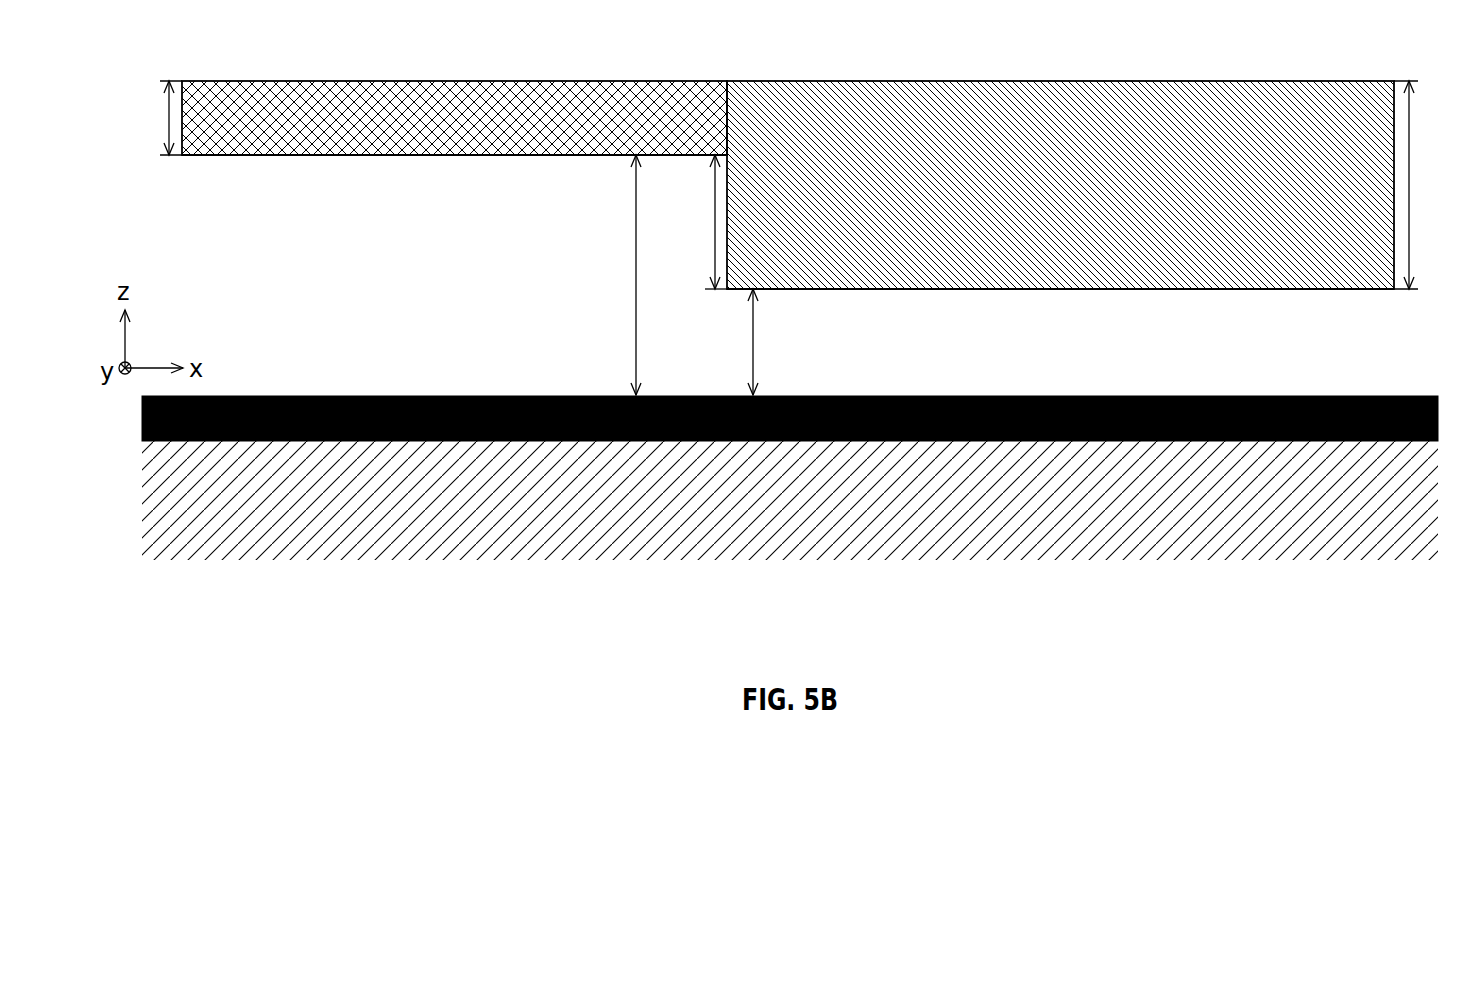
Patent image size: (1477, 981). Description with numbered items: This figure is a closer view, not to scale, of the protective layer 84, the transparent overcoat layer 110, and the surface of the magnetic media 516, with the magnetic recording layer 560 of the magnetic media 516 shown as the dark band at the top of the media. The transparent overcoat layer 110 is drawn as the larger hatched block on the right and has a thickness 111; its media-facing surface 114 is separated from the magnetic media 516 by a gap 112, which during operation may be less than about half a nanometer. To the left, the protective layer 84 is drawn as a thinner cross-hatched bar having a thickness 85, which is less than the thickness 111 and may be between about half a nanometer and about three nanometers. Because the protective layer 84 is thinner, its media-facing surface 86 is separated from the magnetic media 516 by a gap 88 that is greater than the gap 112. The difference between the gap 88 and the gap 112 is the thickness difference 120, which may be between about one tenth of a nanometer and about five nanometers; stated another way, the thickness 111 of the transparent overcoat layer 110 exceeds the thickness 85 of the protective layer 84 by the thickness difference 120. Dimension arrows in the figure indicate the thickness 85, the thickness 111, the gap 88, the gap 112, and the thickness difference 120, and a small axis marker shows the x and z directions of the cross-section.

The protective layer 84 is at (423, 81).
The thickness 85 is at (167, 103).
The media-facing surface 86 is at (388, 156).
The gap 88 is at (635, 250).
The transparent overcoat layer 110 is at (988, 81).
The thickness 111 is at (1410, 188).
The gap 112 is at (752, 326).
The media-facing surface 114 is at (910, 291).
The thickness difference 120 is at (714, 184).
The magnetic media 516 is at (1099, 576).
The magnetic recording layer 560 is at (1229, 384).